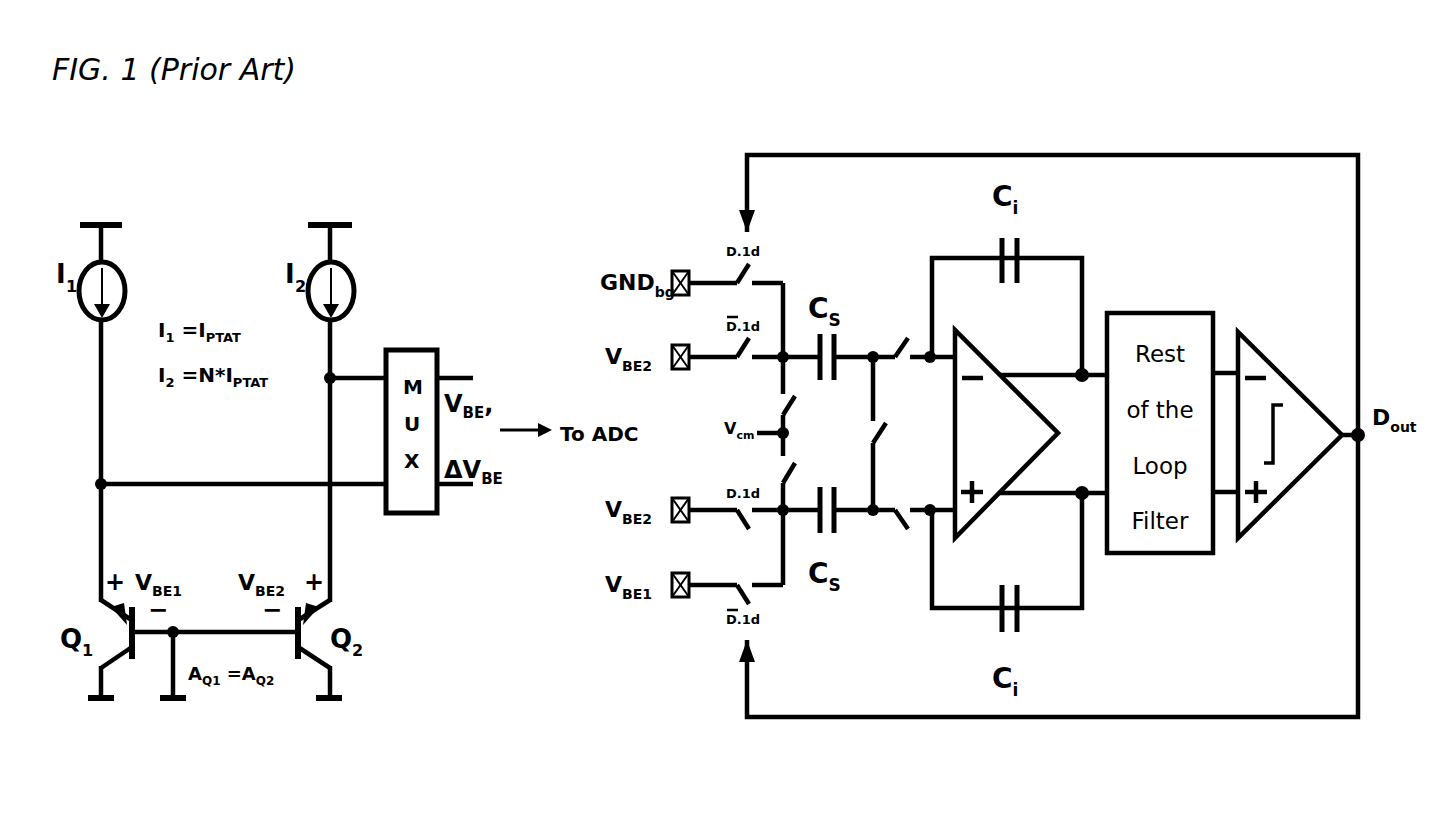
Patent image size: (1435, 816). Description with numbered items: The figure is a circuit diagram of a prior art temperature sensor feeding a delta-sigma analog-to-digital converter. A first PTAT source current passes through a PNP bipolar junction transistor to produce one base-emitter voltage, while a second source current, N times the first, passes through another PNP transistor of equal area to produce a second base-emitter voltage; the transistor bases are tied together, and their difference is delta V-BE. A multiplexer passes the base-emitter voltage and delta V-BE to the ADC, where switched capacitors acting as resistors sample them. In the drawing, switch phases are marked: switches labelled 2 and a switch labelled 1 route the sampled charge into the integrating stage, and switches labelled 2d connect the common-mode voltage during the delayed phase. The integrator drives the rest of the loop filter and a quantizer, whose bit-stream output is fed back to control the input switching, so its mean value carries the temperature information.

The phase 1 switch 1 is at (887, 433).
The phase 2 switches 2 is at (901, 435).
The delayed phase 2 switches to Vcm 2d is at (788, 433).